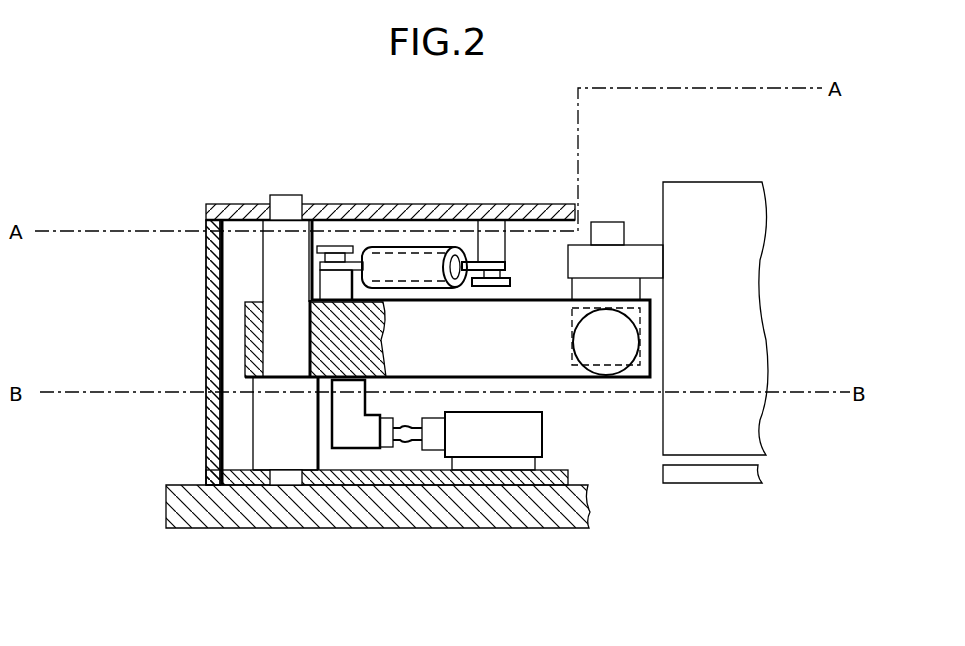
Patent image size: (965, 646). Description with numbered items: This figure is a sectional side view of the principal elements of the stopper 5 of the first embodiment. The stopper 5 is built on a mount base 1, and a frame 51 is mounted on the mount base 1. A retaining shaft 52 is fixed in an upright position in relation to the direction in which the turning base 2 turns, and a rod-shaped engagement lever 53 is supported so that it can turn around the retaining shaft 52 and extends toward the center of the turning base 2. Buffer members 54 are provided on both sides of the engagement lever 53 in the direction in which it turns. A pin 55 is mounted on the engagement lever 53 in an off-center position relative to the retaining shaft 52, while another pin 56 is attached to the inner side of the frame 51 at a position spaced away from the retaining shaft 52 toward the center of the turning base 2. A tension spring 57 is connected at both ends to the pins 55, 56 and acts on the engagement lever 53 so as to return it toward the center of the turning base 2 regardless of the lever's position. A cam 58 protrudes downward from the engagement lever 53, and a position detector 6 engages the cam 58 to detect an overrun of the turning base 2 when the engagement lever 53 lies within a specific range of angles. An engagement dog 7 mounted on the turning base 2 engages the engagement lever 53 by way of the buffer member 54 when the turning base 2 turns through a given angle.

The mount base 1 is at (178, 502).
The turning base 2 is at (730, 182).
The stopper 5 is at (222, 190).
The position detector 6 is at (490, 440).
The engagement dog 7 is at (636, 290).
The frame 51 is at (213, 252).
The retaining shaft 52 is at (285, 204).
The engagement lever 53 is at (400, 357).
The buffer member 54 is at (640, 342).
The pin 55 is at (343, 248).
The pin 56 is at (486, 232).
The tension spring 57 is at (428, 250).
The cam 58 is at (356, 440).